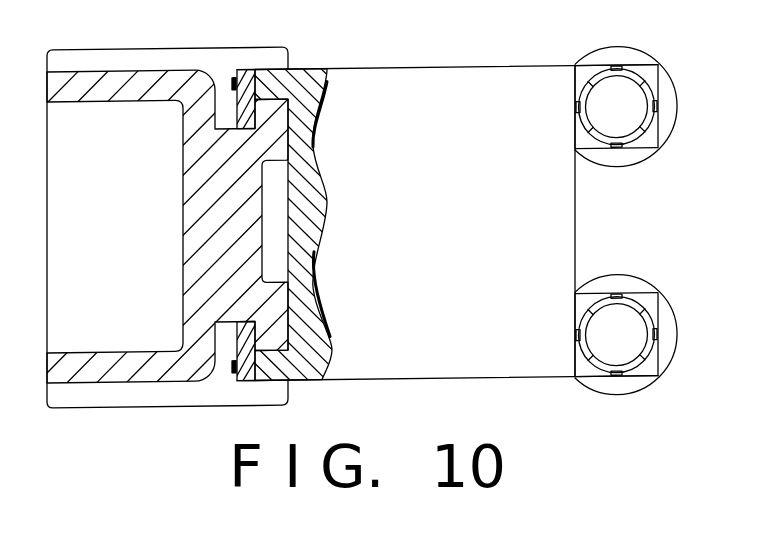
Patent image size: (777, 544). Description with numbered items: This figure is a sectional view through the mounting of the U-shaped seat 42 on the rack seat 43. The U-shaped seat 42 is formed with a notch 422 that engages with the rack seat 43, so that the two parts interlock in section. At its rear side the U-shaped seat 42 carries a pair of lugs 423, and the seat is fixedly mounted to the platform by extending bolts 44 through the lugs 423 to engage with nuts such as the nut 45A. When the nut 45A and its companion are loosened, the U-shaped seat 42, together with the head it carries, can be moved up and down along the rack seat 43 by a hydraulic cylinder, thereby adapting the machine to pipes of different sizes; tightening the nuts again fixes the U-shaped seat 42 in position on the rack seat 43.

The U-shaped seat 42 is at (454, 72).
The rack seat 43 is at (148, 71).
The notch 422 is at (329, 104).
The bolt 44 is at (613, 99).
The lug 423 is at (649, 80).
The nut 45A is at (631, 152).